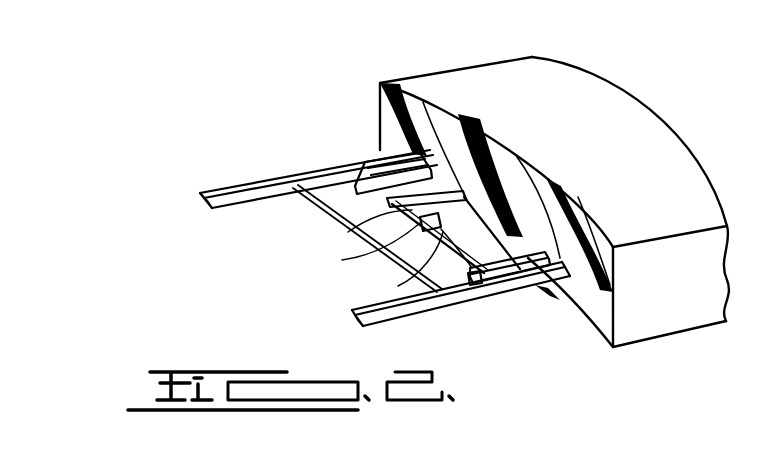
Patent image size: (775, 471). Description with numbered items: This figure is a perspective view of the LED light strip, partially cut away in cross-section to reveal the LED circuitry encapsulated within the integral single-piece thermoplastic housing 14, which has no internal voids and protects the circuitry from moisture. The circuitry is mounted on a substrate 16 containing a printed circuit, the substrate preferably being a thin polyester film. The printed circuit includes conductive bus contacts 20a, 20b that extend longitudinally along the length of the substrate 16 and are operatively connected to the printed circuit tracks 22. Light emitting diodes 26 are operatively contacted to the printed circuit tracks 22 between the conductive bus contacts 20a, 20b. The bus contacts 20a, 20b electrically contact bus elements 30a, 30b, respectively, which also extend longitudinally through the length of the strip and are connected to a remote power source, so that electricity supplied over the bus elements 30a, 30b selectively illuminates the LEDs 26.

The thermoplastic housing 14 is at (625, 127).
The substrate 16 is at (500, 252).
The conductive bus contact 20a is at (364, 182).
The conductive bus contact 20b is at (482, 285).
The printed circuit tracks 22 is at (358, 224).
The light emitting diodes 26 is at (387, 248).
The bus element 30a is at (216, 193).
The bus element 30b is at (352, 313).